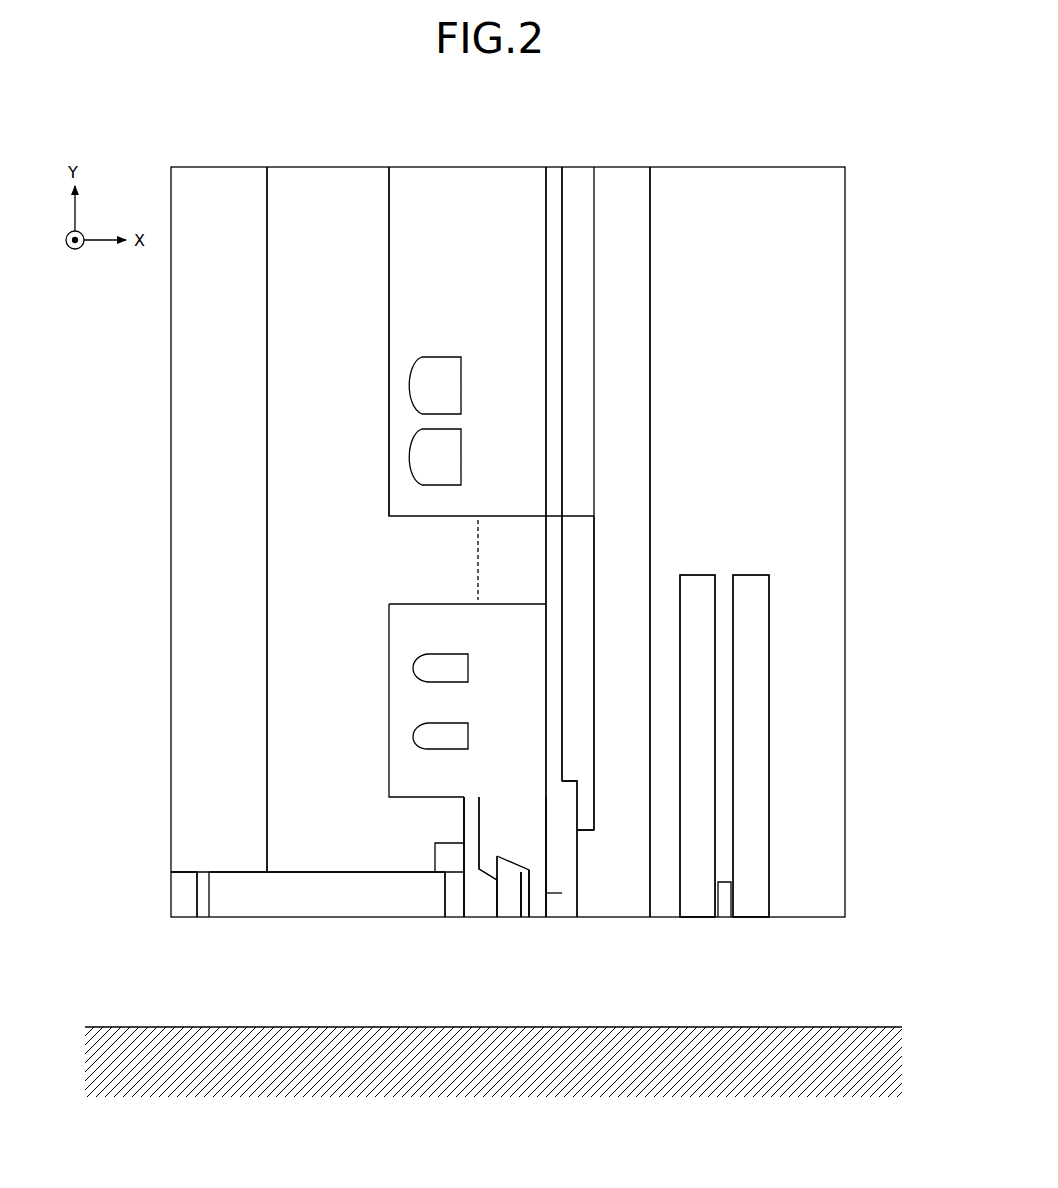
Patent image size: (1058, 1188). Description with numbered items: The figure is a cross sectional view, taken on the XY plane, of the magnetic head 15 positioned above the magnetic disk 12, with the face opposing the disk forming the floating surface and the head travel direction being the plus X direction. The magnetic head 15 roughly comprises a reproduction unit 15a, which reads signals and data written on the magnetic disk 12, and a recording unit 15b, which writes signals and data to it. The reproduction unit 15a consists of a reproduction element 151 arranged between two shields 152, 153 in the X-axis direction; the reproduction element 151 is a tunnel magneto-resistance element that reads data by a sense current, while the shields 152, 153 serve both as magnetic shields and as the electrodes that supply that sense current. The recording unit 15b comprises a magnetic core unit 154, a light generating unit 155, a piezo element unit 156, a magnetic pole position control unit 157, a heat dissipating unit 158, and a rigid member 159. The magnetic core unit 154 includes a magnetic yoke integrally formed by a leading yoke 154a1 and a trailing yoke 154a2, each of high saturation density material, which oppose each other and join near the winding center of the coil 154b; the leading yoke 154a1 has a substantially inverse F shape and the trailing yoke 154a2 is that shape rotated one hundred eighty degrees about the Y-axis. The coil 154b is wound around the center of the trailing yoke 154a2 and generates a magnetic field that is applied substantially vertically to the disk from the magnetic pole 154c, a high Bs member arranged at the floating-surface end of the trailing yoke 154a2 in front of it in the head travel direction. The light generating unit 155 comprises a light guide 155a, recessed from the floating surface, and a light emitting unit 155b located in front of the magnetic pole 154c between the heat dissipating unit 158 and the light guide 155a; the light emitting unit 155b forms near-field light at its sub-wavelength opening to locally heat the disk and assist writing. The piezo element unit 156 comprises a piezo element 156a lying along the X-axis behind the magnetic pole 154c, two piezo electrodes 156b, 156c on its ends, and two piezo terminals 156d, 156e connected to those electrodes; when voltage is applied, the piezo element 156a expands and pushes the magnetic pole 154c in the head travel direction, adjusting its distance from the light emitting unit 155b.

The magnetic disk 12 is at (880, 1027).
The magnetic head 15 is at (846, 272).
The reproduction unit 15a is at (771, 634).
The recording unit 15b is at (652, 358).
The reproduction element 151 is at (722, 918).
The shield 152 is at (750, 918).
The shield 153 is at (698, 918).
The magnetic core unit 154 is at (264, 385).
The leading yoke 154a1 is at (617, 167).
The trailing yoke 154a2 is at (327, 167).
The coil 154b is at (433, 355).
The magnetic pole 154c is at (480, 918).
The light generating unit 155 is at (552, 898).
The light guide 155a is at (545, 345).
The light emitting unit 155b is at (540, 918).
The piezo element unit 156 is at (169, 881).
The piezo element 156a is at (303, 918).
The piezo electrode 156b is at (203, 918).
The piezo electrode 156c is at (455, 918).
The piezo terminal 156d is at (185, 918).
The piezo terminal 156e is at (437, 859).
The magnetic pole position control unit 157 is at (510, 918).
The heat dissipating unit 158 is at (525, 918).
The rigid member 159 is at (577, 918).